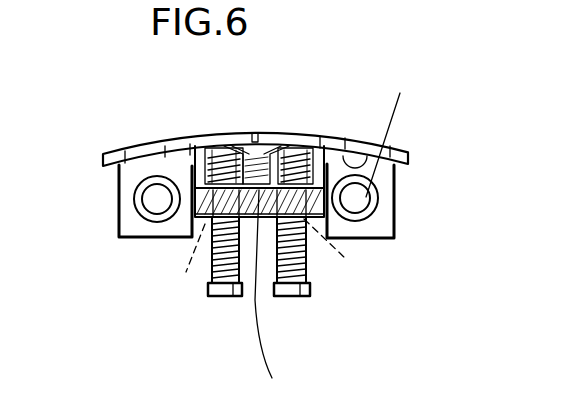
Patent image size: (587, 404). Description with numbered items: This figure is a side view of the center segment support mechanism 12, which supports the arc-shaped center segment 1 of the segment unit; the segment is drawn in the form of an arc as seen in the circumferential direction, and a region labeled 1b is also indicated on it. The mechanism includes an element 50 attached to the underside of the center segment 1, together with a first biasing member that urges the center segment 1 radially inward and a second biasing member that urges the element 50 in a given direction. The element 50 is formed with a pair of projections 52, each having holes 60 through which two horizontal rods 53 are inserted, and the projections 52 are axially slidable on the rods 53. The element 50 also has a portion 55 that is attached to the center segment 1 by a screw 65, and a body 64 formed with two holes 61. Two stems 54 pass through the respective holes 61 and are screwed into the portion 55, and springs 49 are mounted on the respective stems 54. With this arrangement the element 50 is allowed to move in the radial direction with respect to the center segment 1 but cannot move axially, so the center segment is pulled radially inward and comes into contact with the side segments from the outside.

The center segment 1 is at (334, 136).
The plate hole 1b is at (390, 126).
The center segment support mechanism 12 is at (340, 281).
The springs 49 is at (208, 276).
The element 50 is at (386, 227).
The projections 52 is at (127, 240).
The horizontal rods 53 is at (157, 210).
The stems 54 is at (222, 296).
The portion 55 is at (292, 134).
The holes 60 is at (383, 140).
The holes 61 is at (273, 264).
The body 64 is at (282, 297).
The screw 65 is at (240, 134).